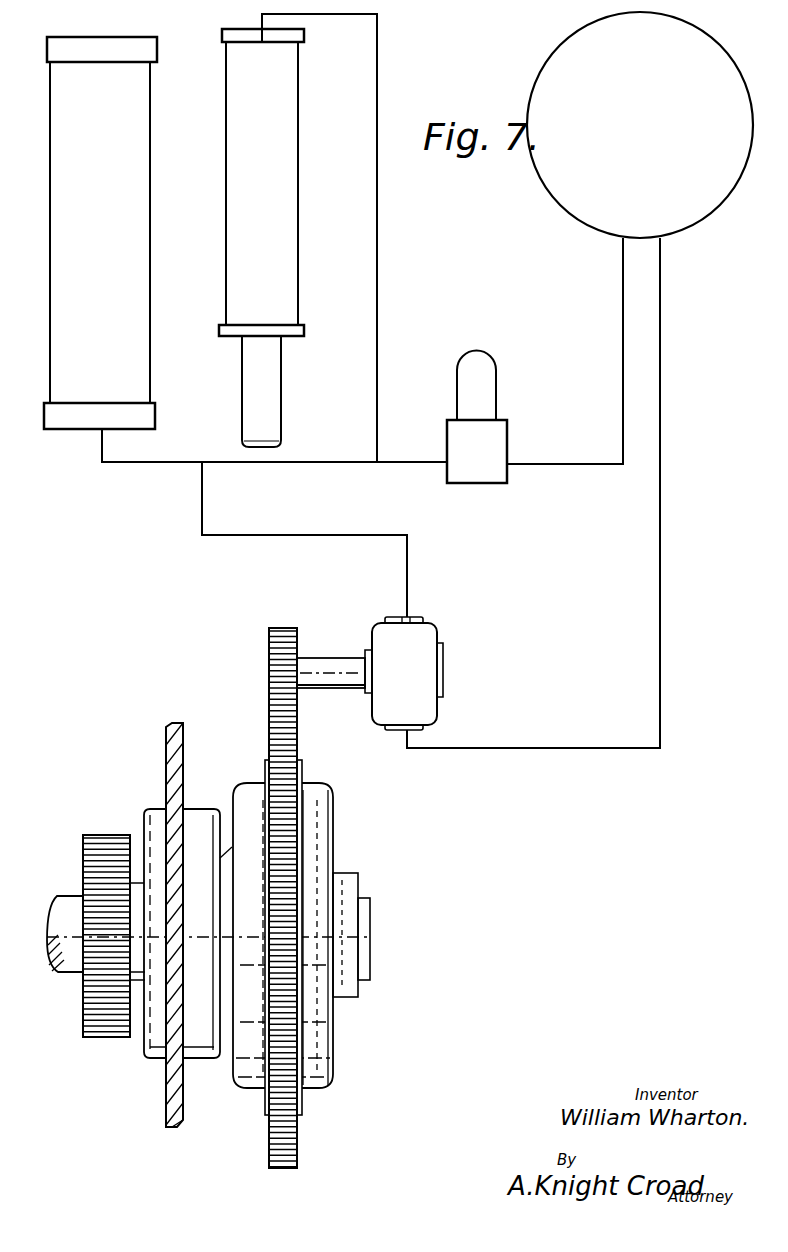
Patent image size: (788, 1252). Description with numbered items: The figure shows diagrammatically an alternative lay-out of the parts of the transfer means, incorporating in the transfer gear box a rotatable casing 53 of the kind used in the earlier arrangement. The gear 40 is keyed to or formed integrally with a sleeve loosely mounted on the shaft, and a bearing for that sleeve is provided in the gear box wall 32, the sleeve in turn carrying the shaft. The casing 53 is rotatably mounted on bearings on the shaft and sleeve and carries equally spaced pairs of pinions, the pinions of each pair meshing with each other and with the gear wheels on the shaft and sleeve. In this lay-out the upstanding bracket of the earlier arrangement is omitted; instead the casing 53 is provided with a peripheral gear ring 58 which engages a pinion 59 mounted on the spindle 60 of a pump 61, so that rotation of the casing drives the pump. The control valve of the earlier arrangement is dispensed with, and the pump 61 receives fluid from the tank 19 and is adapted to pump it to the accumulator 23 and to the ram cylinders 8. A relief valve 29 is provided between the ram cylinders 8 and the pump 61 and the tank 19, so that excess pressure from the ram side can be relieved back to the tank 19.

The ram cylinders 8 is at (282, 297).
The tank 19 is at (588, 218).
The accumulator 23 is at (132, 296).
The relief valve 29 is at (458, 430).
The gear box wall 32 is at (178, 755).
The gear 40 is at (100, 837).
The casing 53 is at (317, 820).
The peripheral gear ring 58 is at (282, 802).
The pinion 59 is at (280, 633).
The spindle 60 is at (322, 665).
The pump 61 is at (383, 643).